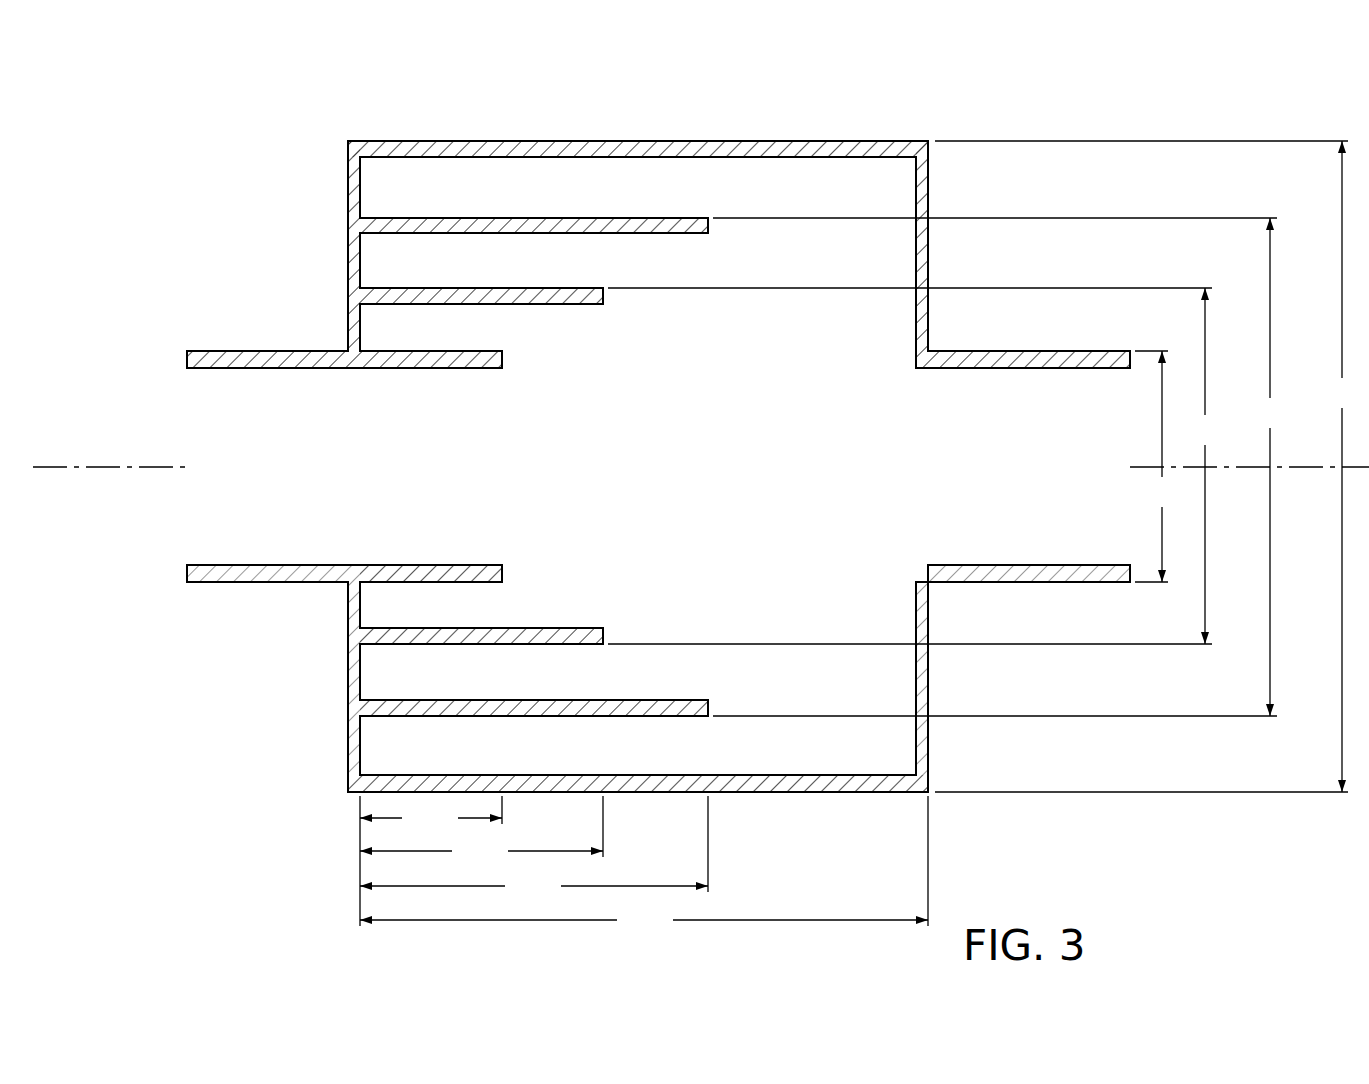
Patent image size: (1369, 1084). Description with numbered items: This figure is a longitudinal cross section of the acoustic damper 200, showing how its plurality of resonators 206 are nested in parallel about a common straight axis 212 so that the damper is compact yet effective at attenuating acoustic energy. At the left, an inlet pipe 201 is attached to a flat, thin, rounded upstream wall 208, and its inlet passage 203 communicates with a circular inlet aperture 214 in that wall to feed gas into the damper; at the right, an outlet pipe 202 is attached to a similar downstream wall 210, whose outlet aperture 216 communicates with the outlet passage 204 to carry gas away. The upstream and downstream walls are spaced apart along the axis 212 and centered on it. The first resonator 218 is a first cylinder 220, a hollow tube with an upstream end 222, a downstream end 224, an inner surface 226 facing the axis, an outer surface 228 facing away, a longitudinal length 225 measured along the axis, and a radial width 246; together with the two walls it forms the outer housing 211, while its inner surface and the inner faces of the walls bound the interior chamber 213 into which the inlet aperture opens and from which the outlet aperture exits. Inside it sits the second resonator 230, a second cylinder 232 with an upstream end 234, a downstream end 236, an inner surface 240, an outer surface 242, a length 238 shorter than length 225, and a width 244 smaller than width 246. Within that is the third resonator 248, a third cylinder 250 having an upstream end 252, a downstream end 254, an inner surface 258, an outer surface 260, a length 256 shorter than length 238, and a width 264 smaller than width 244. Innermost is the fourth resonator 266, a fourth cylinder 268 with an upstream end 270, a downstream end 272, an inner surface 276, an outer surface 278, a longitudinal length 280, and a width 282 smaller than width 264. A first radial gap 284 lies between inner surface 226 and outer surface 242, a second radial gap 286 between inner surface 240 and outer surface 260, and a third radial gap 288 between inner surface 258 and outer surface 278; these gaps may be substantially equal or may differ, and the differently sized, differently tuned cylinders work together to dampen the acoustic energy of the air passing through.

The acoustic damper 200 is at (180, 185).
The inlet pipe 201 is at (240, 368).
The outlet pipe 202 is at (1043, 368).
The inlet passage 203 is at (277, 481).
The outlet passage 204 is at (1008, 481).
The resonators 206 is at (783, 195).
The upstream wall 208 is at (348, 268).
The downstream wall 210 is at (928, 255).
The outer housing 211 is at (335, 792).
The axis 212 is at (110, 467).
The interior chamber 213 is at (627, 481).
The inlet aperture 214 is at (345, 368).
The outlet aperture 216 is at (920, 368).
The first resonator 218 is at (515, 141).
The first cylinder 220 is at (683, 792).
The upstream end 222 is at (362, 141).
The downstream end 224 is at (905, 152).
The longitudinal length 225 is at (644, 865).
The inner surface 226 is at (637, 158).
The outer surface 228 is at (680, 141).
The second resonator 230 is at (565, 225).
The second cylinder 232 is at (645, 716).
The upstream end 234 is at (360, 235).
The downstream end 236 is at (708, 228).
The longitudinal length 238 is at (534, 848).
The inner surface 240 is at (612, 233).
The outer surface 242 is at (670, 218).
The width 244 is at (1004, 467).
The width 246 is at (1151, 466).
The third resonator 248 is at (565, 300).
The third cylinder 250 is at (540, 644).
The upstream end 252 is at (360, 304).
The downstream end 254 is at (603, 297).
The longitudinal length 256 is at (481, 831).
The inner surface 258 is at (543, 304).
The outer surface 260 is at (430, 288).
The width 264 is at (919, 466).
The fourth resonator 266 is at (428, 368).
The fourth cylinder 268 is at (502, 582).
The upstream end 270 is at (362, 368).
The downstream end 272 is at (502, 358).
The inner surface 276 is at (473, 368).
The outer surface 278 is at (437, 351).
The longitudinal length 280 is at (431, 861).
The width 282 is at (1161, 466).
The first radial gap 284 is at (432, 761).
The second radial gap 286 is at (432, 689).
The third radial gap 288 is at (432, 619).